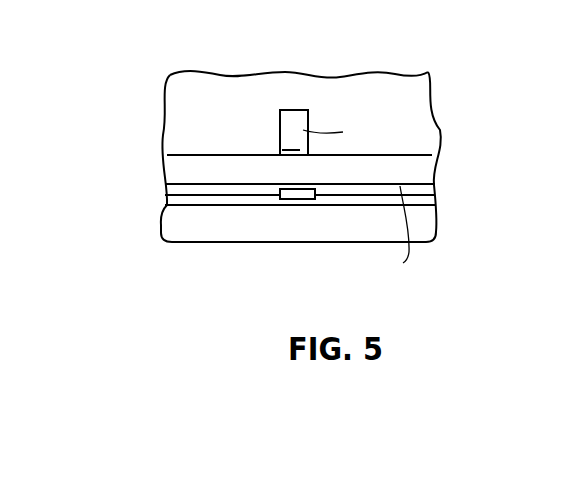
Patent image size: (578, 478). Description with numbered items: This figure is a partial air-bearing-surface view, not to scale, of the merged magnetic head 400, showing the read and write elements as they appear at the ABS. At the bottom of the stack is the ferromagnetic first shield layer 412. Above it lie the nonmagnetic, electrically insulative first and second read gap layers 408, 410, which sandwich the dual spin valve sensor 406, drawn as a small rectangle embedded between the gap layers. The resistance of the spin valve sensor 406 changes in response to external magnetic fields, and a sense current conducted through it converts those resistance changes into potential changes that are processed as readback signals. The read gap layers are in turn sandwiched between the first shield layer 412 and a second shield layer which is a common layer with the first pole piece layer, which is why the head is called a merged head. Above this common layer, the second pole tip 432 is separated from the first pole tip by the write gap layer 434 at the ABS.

The merged magnetic head 400 is at (457, 84).
The second pole tip 432 is at (293, 122).
The write gap layer 434 is at (293, 147).
The first read gap layer 408 is at (217, 205).
The dual spin valve sensor 406 is at (298, 199).
The second read gap layer 410 is at (398, 239).
The first shield layer 412 is at (424, 222).